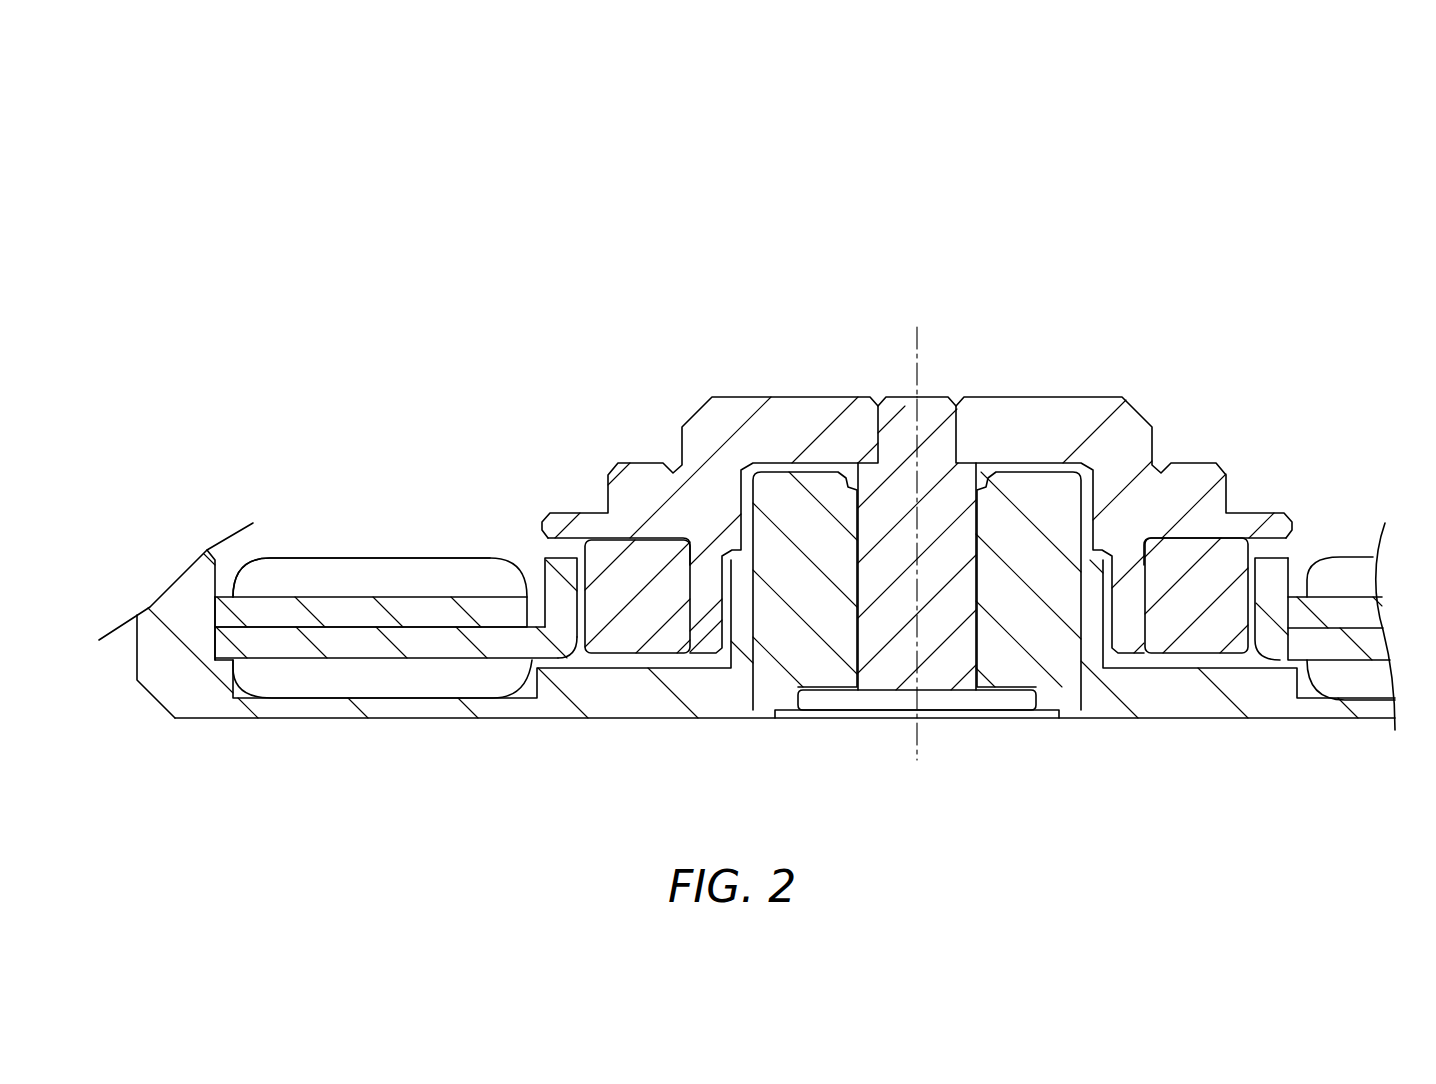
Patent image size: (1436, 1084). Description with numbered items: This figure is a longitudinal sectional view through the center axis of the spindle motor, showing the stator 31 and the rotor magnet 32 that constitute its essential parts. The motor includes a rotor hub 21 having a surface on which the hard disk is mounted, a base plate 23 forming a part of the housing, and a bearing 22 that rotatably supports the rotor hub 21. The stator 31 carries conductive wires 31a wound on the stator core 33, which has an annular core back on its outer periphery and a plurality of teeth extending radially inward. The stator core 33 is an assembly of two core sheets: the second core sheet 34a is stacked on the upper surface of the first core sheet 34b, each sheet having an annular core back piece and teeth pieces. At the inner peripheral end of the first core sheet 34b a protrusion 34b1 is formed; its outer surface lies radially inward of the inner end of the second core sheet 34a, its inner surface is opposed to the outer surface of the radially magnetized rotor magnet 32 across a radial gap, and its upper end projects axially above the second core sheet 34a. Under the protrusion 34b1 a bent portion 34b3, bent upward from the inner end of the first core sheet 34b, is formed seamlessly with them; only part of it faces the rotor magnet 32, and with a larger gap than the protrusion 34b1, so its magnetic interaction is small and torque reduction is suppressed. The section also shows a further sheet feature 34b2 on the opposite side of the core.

The rotor hub 21 is at (1110, 440).
The bearing 22 is at (1035, 640).
The base plate 23 is at (718, 695).
The stator 31 is at (463, 506).
The conductive wires 31a is at (367, 582).
The rotor magnet 32 is at (1190, 603).
The stator core 33 is at (354, 294).
The second core sheet 34a is at (255, 612).
The first core sheet 34b is at (253, 645).
The protrusion 34b1 is at (565, 600).
The retainer tab (right) 34b2 is at (1246, 594).
The bent portion 34b3 is at (565, 640).